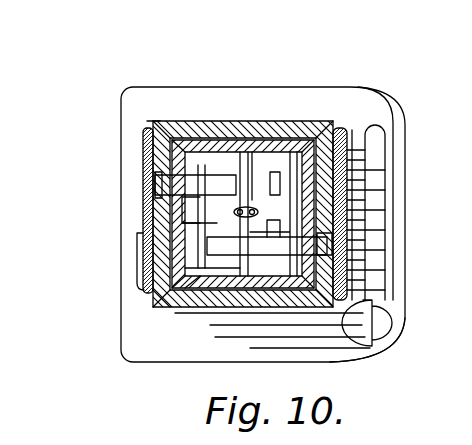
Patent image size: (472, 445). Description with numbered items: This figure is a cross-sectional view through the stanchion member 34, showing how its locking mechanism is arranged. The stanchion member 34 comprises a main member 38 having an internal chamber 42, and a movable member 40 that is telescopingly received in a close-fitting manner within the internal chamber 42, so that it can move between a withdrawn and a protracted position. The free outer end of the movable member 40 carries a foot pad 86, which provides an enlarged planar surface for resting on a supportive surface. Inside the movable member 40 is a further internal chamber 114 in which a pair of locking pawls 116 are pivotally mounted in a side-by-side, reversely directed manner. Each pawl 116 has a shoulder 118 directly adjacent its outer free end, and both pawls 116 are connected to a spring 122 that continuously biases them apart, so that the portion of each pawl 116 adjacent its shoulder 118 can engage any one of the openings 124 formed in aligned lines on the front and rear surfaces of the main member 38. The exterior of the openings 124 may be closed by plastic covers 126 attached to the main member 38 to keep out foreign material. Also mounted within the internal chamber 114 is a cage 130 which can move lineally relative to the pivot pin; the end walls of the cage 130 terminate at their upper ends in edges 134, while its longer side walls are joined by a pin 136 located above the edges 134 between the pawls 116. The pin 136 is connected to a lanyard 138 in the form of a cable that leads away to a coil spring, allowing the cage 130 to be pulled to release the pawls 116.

The stanchion member 34 is at (161, 114).
The main member 38 is at (284, 121).
The movable member 40 is at (265, 121).
The internal chamber 42 is at (343, 100).
The foot pad 86 is at (135, 318).
The internal chamber 114 is at (320, 307).
The locking pawls 116 is at (210, 121).
The shoulder 118 is at (153, 189).
The spring 122 is at (205, 223).
The openings 124 is at (155, 181).
The covers 126 is at (145, 136).
The cage 130 is at (236, 121).
The edges 134 is at (200, 256).
The pin 136 is at (226, 292).
The lanyard 138 is at (190, 303).